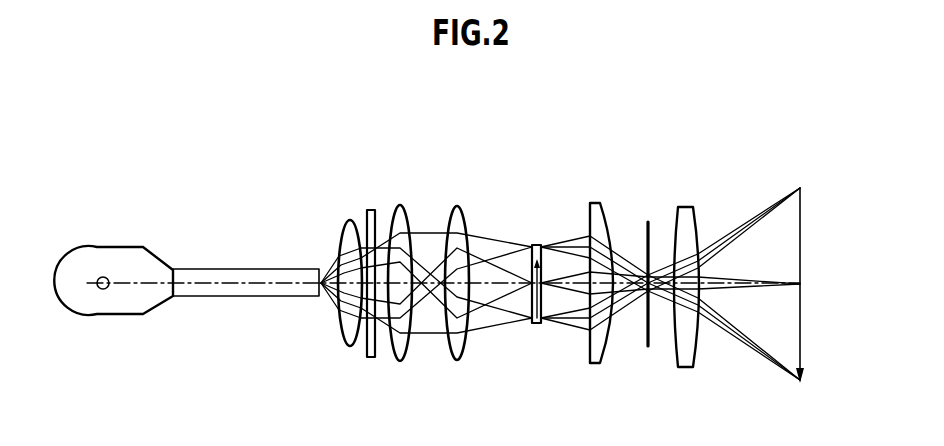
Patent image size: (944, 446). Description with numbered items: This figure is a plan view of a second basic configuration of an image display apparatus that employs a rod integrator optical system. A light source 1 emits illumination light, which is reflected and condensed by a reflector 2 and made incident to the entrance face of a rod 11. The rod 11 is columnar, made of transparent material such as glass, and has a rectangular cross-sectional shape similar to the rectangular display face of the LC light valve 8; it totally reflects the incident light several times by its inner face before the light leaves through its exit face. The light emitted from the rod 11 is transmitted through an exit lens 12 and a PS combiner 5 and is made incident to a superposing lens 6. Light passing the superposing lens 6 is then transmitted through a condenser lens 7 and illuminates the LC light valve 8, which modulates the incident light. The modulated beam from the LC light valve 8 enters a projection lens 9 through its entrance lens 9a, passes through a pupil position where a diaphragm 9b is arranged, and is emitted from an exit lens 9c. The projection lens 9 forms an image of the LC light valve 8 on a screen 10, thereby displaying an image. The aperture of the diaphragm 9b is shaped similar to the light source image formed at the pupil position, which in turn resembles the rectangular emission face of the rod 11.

The light source 1 is at (104, 271).
The reflector 2 is at (79, 247).
The PS combiner 5 is at (371, 209).
The superposing lens 6 is at (400, 205).
The condenser lens 7 is at (457, 206).
The LC light valve 8 is at (536, 245).
The projection lens 9 is at (643, 262).
The entrance lens 9a is at (595, 364).
The diaphragm 9b is at (647, 348).
The exit lens 9c is at (686, 368).
The screen 10 is at (803, 207).
The rod 11 is at (236, 268).
The exit lens 12 is at (347, 219).